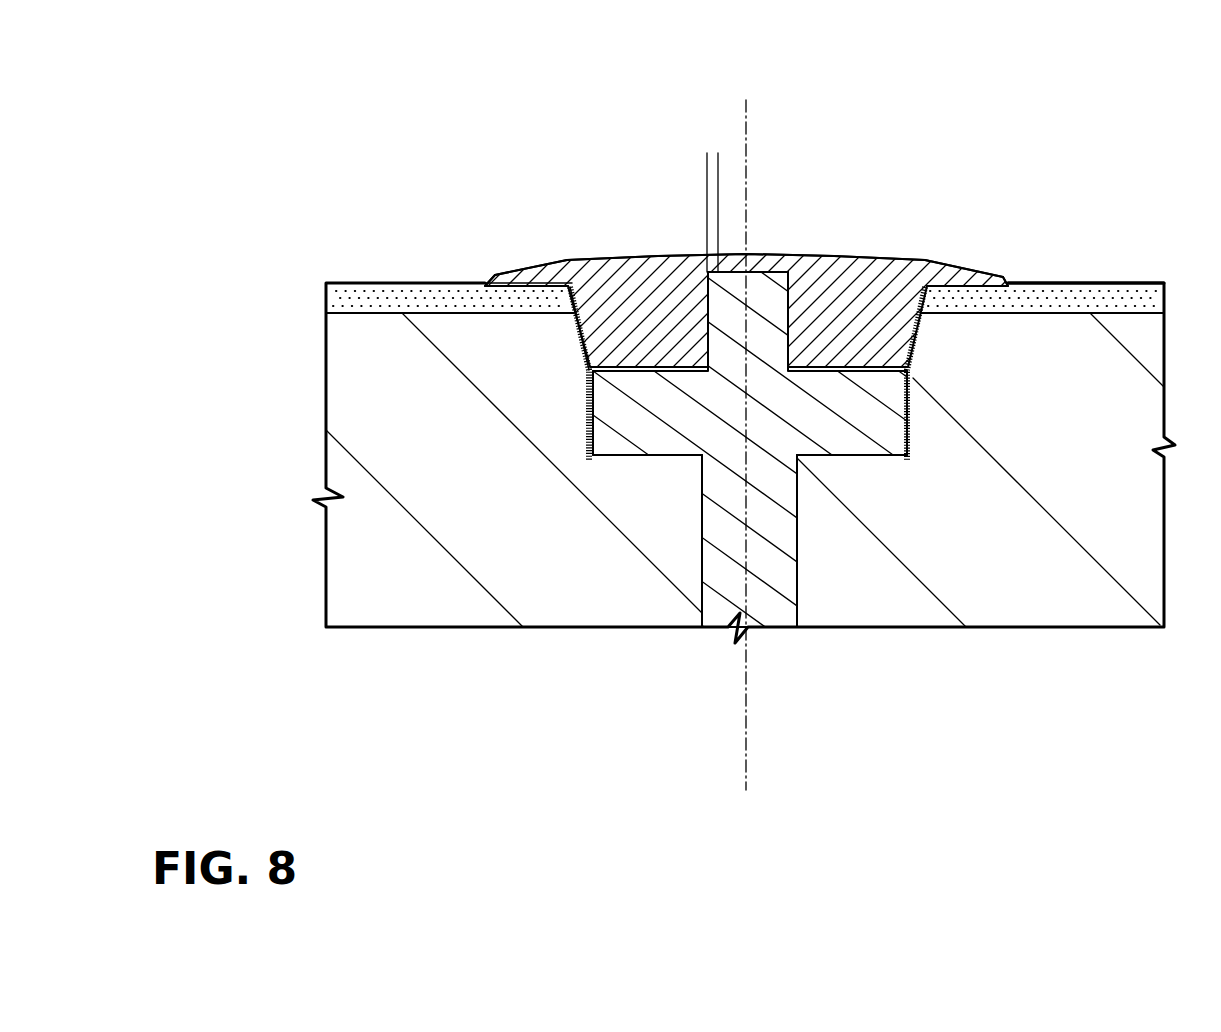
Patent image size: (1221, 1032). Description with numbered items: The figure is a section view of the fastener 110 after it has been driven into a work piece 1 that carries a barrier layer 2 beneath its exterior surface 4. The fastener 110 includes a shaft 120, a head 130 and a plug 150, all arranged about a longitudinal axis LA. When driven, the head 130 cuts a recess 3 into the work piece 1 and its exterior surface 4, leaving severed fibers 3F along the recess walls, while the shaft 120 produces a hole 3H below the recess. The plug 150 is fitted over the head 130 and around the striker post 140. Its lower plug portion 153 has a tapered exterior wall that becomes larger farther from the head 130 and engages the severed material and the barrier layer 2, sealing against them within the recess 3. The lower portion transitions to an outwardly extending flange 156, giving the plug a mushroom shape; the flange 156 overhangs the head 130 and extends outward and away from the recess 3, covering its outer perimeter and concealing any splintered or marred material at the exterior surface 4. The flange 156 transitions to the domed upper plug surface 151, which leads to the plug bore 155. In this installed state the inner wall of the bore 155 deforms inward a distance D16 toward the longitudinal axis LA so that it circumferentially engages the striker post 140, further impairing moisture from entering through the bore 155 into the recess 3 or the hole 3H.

The base block / substrate 1 is at (1052, 567).
The barrier layer 2 is at (1118, 300).
The recess 3 is at (584, 370).
The roughened flange surface of insert 3F is at (568, 355).
The hole 3H is at (798, 582).
The exterior surface 4 is at (1042, 283).
The fastener 110 is at (688, 556).
The shaft 120 is at (730, 542).
The head 130 is at (590, 458).
The striker post 140 is at (728, 314).
The plug 150 is at (566, 256).
The upper plug surface 151 is at (612, 257).
The lower plug portion 153 is at (572, 353).
The plug bore 155 is at (792, 270).
The flange 156 is at (487, 285).
The distance D16 is at (758, 162).
The longitudinal axis LA is at (744, 115).